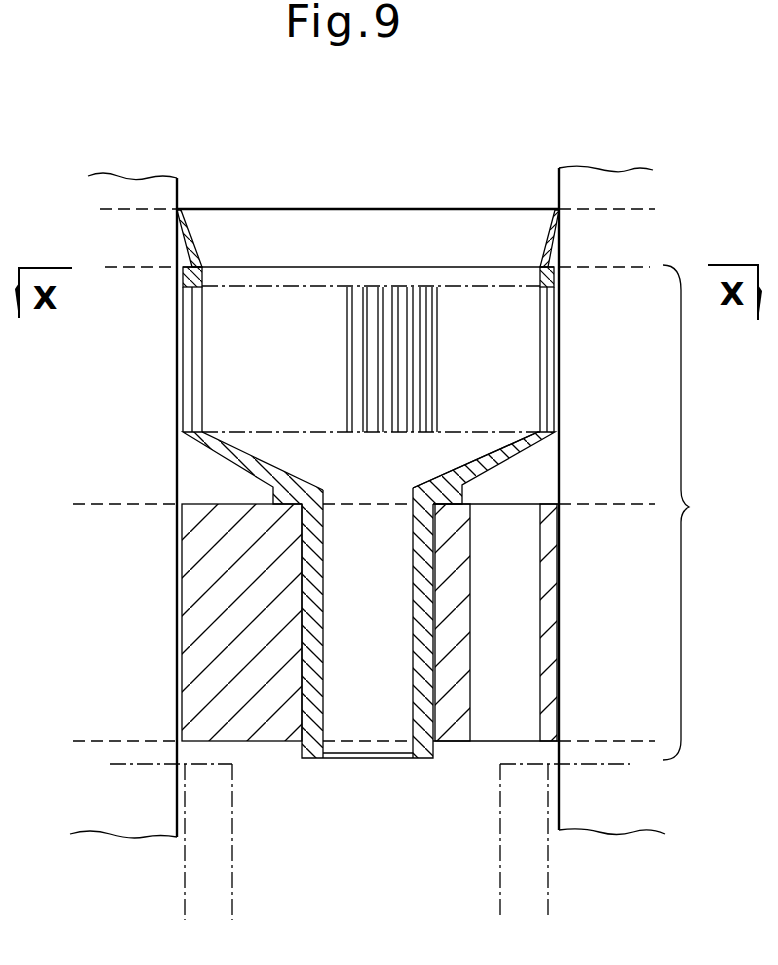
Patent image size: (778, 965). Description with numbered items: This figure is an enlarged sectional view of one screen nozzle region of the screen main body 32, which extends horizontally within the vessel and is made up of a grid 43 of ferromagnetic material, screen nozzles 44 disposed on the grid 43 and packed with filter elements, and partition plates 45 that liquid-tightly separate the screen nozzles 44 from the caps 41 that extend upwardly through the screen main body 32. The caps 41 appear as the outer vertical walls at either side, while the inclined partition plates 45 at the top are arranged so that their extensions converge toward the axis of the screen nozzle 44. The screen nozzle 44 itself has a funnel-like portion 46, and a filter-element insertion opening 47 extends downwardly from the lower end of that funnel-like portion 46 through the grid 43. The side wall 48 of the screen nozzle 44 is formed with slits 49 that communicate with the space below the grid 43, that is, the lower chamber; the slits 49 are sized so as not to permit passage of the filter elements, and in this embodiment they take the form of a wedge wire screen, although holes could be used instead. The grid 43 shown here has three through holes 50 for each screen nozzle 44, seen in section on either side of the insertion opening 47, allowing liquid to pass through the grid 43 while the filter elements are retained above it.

The cap 41 is at (160, 193).
The partition plate 45 is at (550, 237).
The side wall 48 is at (192, 383).
The slits 49 is at (380, 365).
The funnel-like portion 46 is at (453, 463).
The screen nozzle 44 is at (540, 471).
The filter-element insertion opening 47 is at (433, 753).
The grid 43 is at (263, 730).
The through holes 50 is at (515, 657).
The screen main body 32 is at (690, 512).